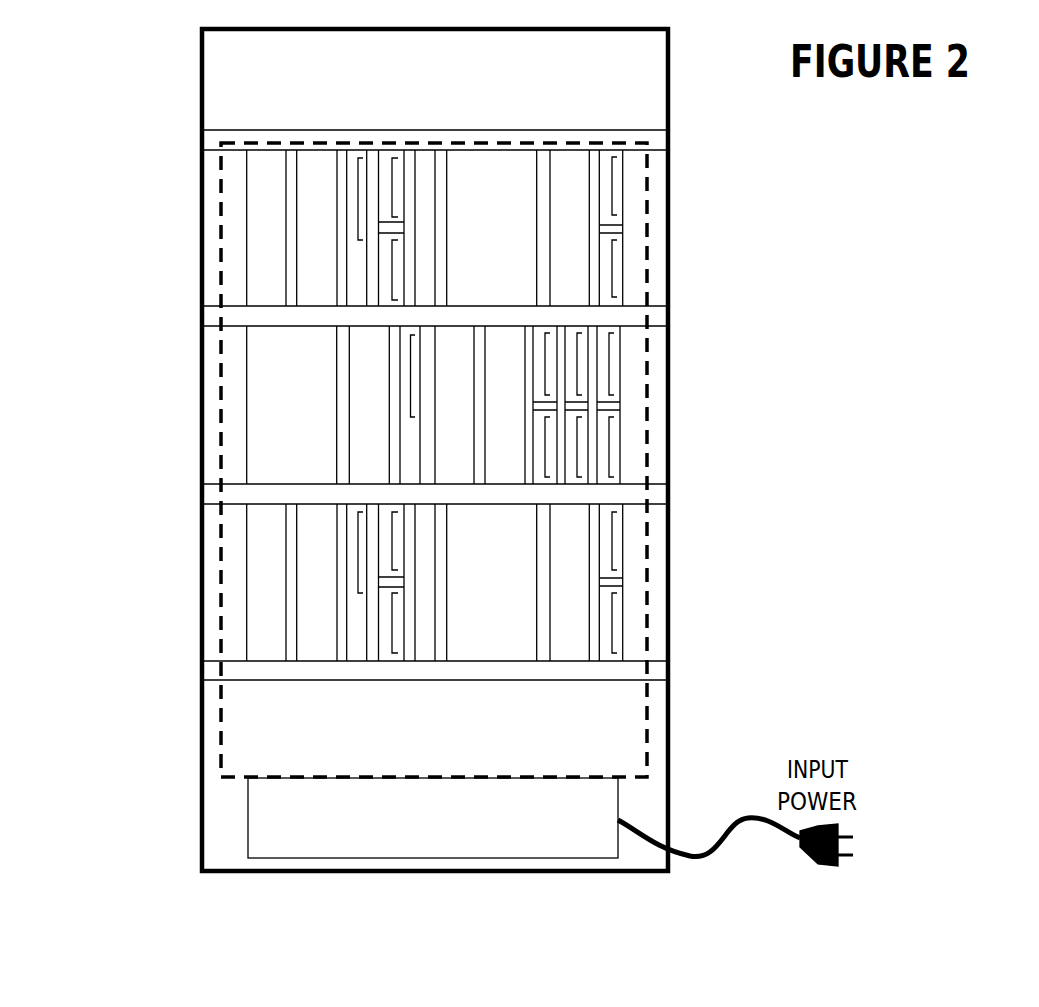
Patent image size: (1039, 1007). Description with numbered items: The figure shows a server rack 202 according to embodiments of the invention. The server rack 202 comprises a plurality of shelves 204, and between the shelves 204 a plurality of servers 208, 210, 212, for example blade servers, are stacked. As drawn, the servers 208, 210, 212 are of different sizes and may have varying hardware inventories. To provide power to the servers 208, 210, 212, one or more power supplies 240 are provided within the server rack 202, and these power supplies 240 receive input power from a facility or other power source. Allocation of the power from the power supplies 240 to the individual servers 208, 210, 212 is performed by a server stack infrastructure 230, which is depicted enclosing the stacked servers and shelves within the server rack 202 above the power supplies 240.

The server rack 202 is at (452, 94).
The shelves 204 is at (417, 410).
The server 208 is at (617, 535).
The server 210 is at (565, 567).
The server 212 is at (523, 625).
The server stack infrastructure 230 is at (647, 728).
The power supplies 240 is at (452, 844).